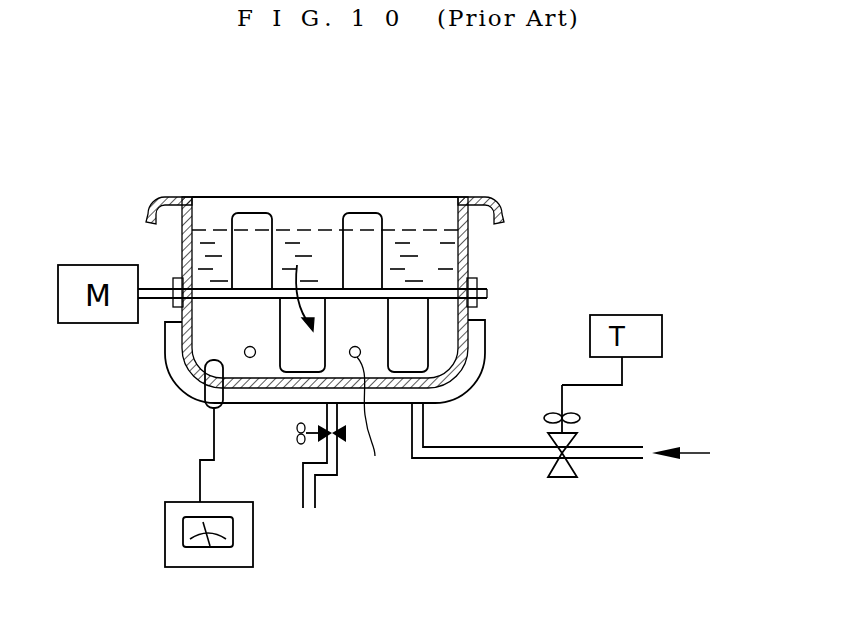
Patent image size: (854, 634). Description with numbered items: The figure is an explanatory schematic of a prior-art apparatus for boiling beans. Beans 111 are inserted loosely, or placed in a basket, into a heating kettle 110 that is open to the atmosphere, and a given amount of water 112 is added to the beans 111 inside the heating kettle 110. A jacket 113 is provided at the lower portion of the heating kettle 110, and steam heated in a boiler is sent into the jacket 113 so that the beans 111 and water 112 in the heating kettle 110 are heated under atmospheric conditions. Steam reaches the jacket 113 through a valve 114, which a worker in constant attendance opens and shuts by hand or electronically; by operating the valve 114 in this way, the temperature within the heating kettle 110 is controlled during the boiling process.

The heating kettle 110 is at (470, 236).
The beans 111 is at (373, 422).
The water 112 is at (323, 229).
The jacket 113 is at (480, 338).
The valve 114 is at (546, 440).